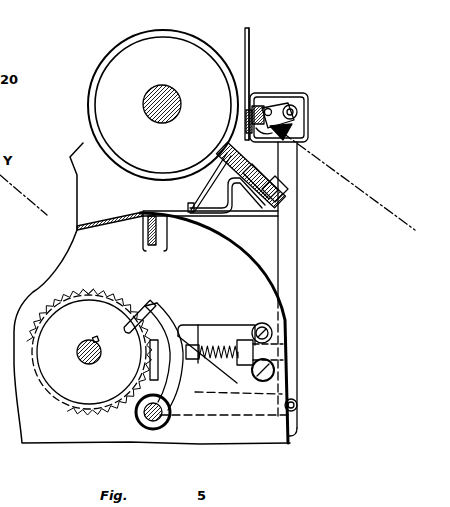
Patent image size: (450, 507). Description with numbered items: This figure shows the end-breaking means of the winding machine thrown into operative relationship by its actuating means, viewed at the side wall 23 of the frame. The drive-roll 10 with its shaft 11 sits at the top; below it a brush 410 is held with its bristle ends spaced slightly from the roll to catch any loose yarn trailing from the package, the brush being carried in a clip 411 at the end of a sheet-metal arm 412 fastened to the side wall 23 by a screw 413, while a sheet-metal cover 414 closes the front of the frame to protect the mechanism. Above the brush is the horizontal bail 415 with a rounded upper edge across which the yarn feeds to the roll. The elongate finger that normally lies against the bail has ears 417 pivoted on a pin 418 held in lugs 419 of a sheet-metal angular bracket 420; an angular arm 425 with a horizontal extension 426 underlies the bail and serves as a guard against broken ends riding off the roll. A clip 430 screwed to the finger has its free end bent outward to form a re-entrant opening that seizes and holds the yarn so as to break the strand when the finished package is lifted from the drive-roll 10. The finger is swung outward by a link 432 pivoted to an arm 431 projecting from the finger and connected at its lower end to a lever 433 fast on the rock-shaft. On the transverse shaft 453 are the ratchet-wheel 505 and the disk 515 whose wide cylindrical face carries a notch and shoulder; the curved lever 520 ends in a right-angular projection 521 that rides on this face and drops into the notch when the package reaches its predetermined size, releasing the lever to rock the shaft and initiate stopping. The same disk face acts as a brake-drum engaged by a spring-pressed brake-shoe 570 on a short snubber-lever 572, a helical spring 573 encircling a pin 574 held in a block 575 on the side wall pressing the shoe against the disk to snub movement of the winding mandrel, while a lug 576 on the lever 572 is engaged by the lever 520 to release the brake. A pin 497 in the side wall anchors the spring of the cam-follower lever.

The drive-roll 10 is at (163, 30).
The shaft 11 is at (150, 90).
The side wall 23 is at (266, 435).
The brush 410 is at (268, 177).
The clip 411 is at (281, 200).
The sheet-metal arm 412 is at (229, 209).
The screw 413 is at (153, 209).
The sheet-metal cover 414 is at (262, 258).
The bail 415 is at (230, 150).
The ears 417 is at (263, 107).
The pin 418 is at (277, 115).
The lugs 419 is at (296, 106).
The angular bracket 420 is at (308, 105).
The angular arm 425 is at (249, 55).
The horizontal extension 426 is at (249, 35).
The clip 430 is at (294, 130).
The arm 431 is at (300, 117).
The link 432 is at (299, 250).
The lever 433 is at (232, 415).
The transverse shaft 453 is at (97, 363).
The pin 497 is at (262, 323).
The ratchet-wheel 505 is at (106, 297).
The disk 515 is at (88, 305).
The curved lever 520 is at (165, 305).
The right-angular projection 521 is at (135, 318).
The brake-shoe 570 is at (180, 330).
The lever 572 is at (180, 373).
The helical spring 573 is at (215, 347).
The pin 574 is at (240, 362).
The block 575 is at (240, 340).
The lug 576 is at (196, 345).